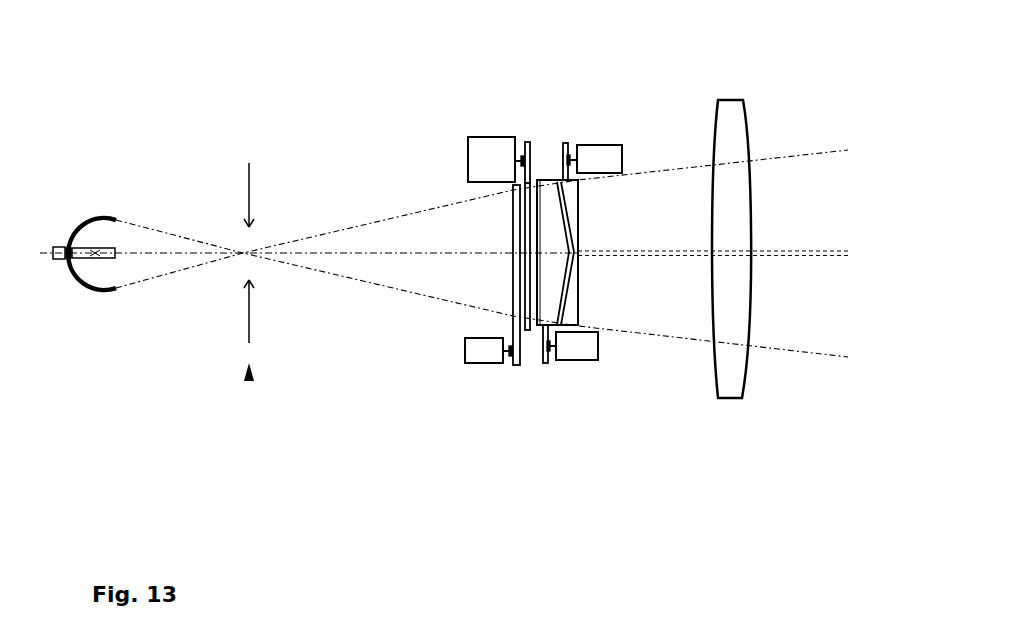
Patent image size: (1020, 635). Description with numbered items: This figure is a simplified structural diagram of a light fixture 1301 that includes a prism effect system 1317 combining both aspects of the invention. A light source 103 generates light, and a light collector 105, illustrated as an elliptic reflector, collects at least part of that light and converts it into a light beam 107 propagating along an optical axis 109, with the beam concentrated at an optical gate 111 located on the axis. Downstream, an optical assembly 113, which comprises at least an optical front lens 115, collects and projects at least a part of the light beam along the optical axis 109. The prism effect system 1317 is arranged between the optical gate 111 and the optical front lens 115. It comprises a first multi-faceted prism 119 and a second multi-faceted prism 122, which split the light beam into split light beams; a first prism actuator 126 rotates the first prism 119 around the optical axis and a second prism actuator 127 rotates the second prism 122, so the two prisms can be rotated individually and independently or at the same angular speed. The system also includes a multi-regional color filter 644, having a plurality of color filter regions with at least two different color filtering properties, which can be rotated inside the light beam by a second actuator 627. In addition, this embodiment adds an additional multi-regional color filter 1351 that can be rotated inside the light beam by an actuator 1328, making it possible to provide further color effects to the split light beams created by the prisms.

The light fixture 1301 is at (218, 60).
The light source 103 is at (102, 263).
The light collector 105 is at (118, 291).
The light beam 107 is at (205, 247).
The optical axis 109 is at (803, 242).
The optical gate 111 is at (245, 383).
The optical assembly 113 is at (754, 445).
The optical front lens 115 is at (745, 132).
The first multi-faceted prism 119 is at (575, 292).
The second multi-faceted prism 122 is at (579, 294).
The first prism actuator 126 is at (570, 344).
The second prism actuator 127 is at (592, 161).
The second actuator 627 is at (499, 160).
The actuator 1328 is at (489, 350).
The additional multi-regional color filter 1351 is at (513, 262).
The multi-regional color filter 644 is at (525, 270).
The prism effect system 1317 is at (530, 436).